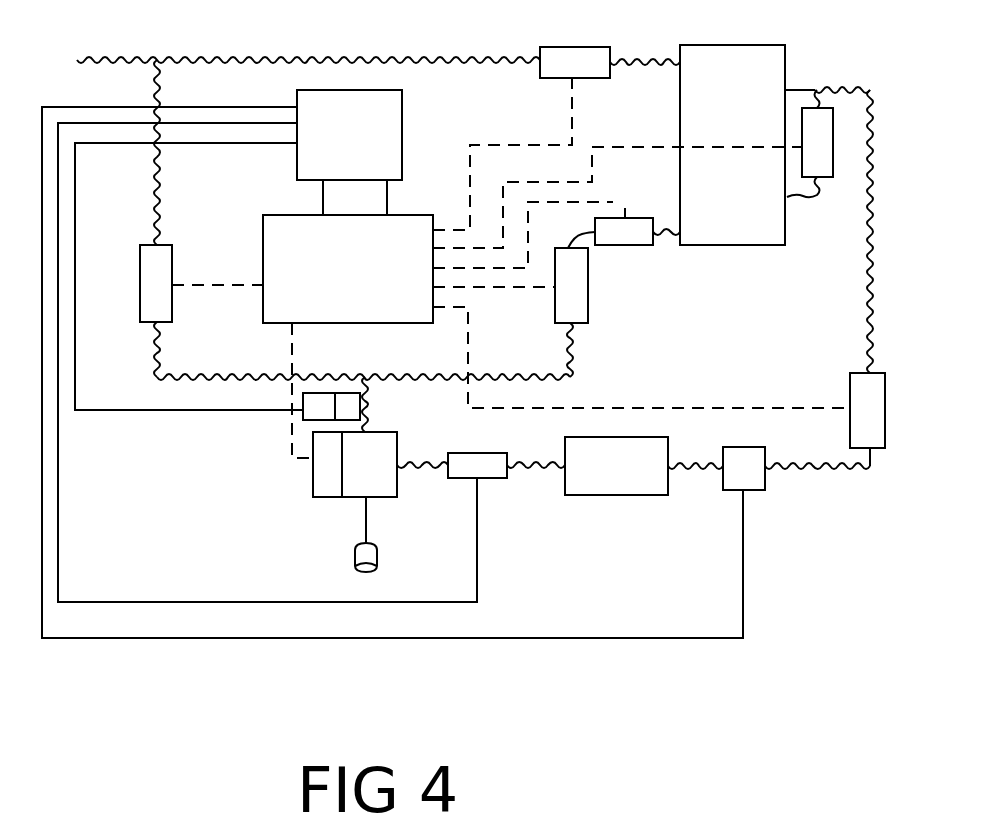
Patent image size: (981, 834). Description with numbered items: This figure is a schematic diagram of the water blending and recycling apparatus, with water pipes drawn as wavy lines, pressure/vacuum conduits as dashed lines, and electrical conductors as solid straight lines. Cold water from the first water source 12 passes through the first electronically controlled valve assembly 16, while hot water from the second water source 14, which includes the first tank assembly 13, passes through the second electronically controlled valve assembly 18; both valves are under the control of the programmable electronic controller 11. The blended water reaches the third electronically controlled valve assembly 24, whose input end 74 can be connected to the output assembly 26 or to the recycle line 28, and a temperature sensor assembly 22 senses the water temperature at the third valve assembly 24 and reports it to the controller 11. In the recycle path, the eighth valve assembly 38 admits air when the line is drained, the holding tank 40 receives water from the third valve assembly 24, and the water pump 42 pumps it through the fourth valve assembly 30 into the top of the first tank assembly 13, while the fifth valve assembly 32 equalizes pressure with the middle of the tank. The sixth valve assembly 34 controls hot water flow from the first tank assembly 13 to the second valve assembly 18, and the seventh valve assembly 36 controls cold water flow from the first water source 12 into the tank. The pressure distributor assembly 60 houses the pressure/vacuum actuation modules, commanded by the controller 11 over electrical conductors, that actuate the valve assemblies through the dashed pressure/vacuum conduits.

The programmable electronic controller 11 is at (347, 145).
The first water source 12 is at (112, 60).
The first tank assembly 13 is at (750, 220).
The second water source 14 is at (578, 237).
The first electronically controlled valve assembly 16 is at (155, 265).
The second electronically controlled valve assembly 18 is at (572, 293).
The temperature sensor assembly 22 is at (350, 415).
The third electronically controlled valve assembly 24 is at (341, 503).
The output assembly 26 is at (357, 577).
The recycle line 28 is at (413, 470).
The fourth electronically controlled valve assembly 30 is at (875, 420).
The fifth electronically controlled valve assembly 32 is at (820, 142).
The sixth electronically controlled valve assembly 34 is at (643, 238).
The seventh electronically controlled valve assembly 36 is at (562, 62).
The eighth electronically controlled valve assembly 38 is at (482, 468).
The holding tank 40 is at (617, 480).
The water pump 42 is at (740, 478).
The pressure distributor assembly 60 is at (262, 300).
The input end 74 is at (366, 380).